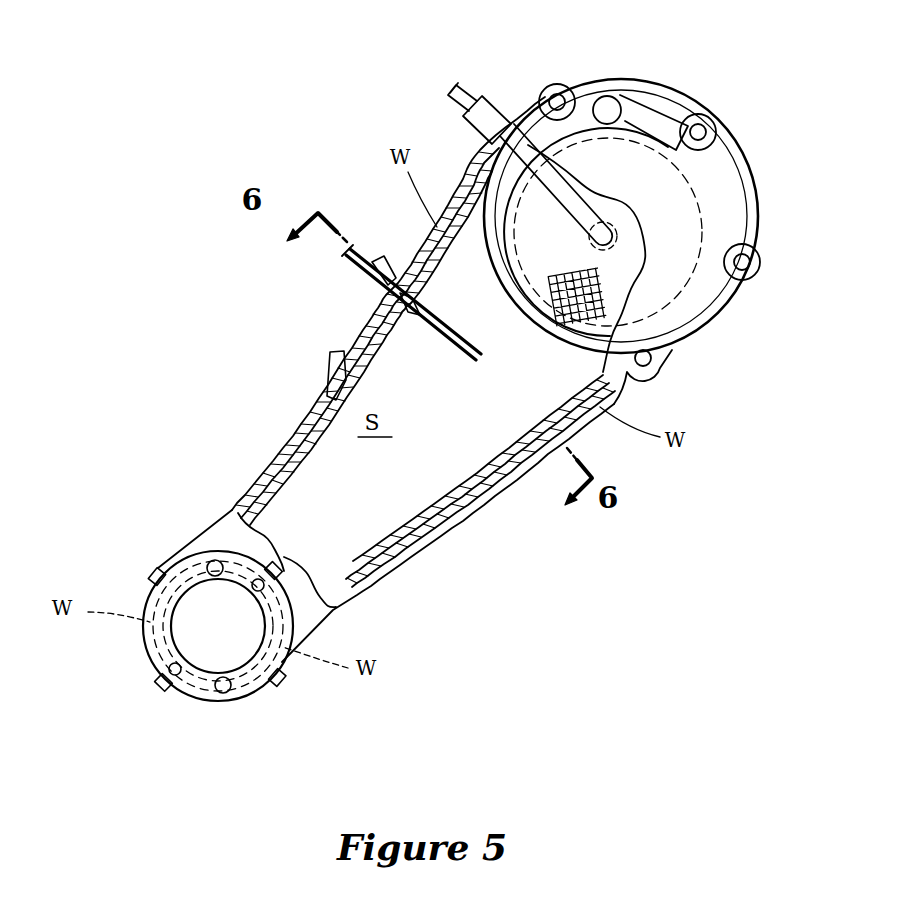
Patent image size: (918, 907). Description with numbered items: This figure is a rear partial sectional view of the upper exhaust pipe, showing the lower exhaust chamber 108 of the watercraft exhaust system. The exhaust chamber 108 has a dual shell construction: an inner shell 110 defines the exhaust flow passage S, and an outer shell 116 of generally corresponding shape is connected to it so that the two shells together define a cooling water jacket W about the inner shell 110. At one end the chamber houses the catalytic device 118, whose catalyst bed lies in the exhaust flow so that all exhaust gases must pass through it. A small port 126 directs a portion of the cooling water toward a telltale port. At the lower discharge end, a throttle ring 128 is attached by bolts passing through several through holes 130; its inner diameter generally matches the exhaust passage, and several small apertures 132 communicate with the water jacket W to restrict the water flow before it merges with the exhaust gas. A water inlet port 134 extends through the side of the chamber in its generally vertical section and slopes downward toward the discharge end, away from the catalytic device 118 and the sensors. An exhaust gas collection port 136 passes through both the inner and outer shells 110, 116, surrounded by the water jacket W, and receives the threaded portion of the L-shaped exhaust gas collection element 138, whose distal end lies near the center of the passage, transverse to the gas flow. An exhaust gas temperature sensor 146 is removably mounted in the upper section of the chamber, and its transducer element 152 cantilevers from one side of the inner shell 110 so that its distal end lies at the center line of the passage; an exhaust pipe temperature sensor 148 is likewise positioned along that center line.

The lower exhaust chamber 108 is at (390, 565).
The inner shell 110 is at (470, 502).
The outer shell 116 is at (442, 514).
The catalytic device 118 is at (603, 318).
The port 126 is at (622, 104).
The throttle ring 128 is at (146, 592).
The through holes 130 is at (285, 557).
The apertures 132 is at (215, 560).
The water inlet port 134 is at (335, 365).
The exhaust gas collection port 136 is at (402, 262).
The exhaust gas collection element 138 is at (446, 335).
The exhaust gas temperature sensor 146 is at (484, 105).
The exhaust pipe temperature sensor 148 is at (632, 232).
The transducer element 152 is at (568, 203).